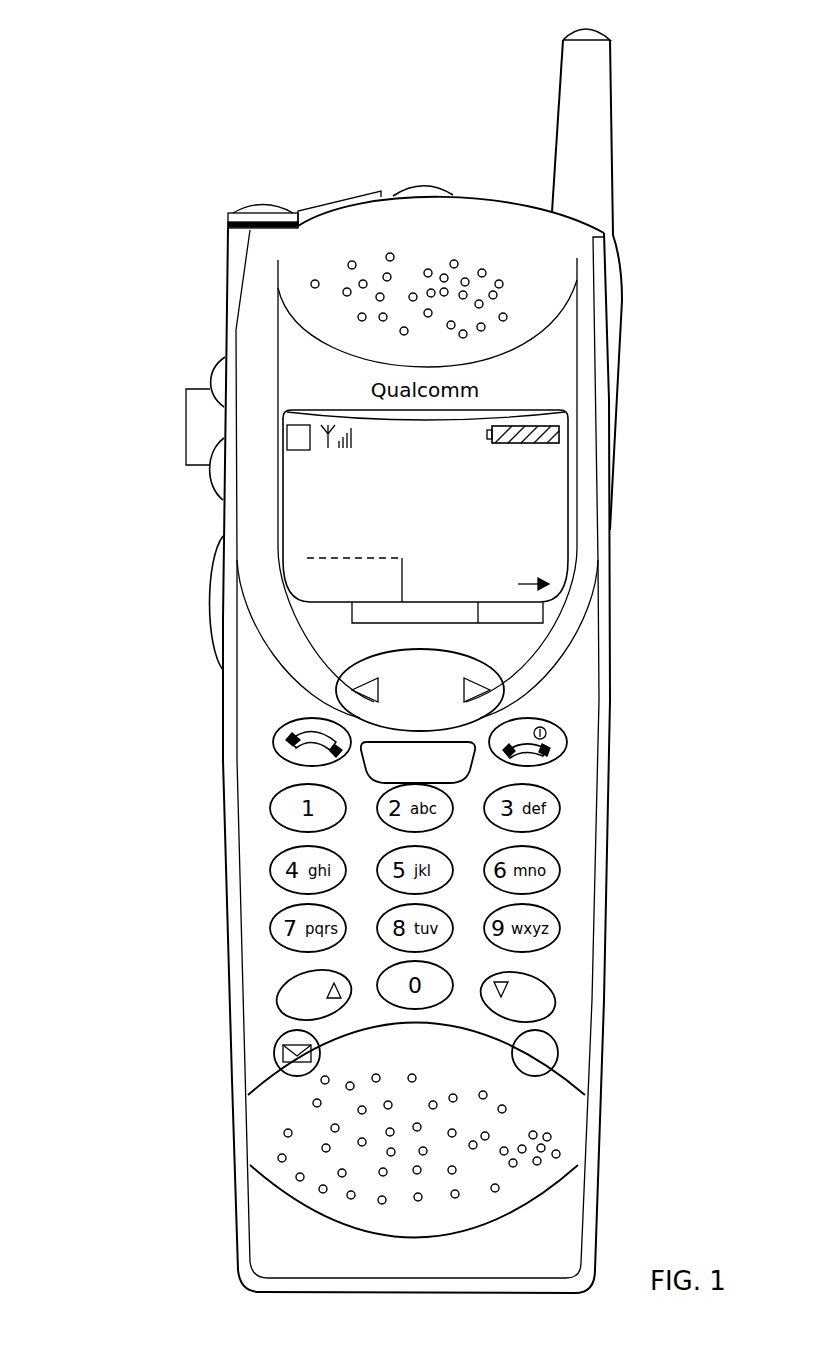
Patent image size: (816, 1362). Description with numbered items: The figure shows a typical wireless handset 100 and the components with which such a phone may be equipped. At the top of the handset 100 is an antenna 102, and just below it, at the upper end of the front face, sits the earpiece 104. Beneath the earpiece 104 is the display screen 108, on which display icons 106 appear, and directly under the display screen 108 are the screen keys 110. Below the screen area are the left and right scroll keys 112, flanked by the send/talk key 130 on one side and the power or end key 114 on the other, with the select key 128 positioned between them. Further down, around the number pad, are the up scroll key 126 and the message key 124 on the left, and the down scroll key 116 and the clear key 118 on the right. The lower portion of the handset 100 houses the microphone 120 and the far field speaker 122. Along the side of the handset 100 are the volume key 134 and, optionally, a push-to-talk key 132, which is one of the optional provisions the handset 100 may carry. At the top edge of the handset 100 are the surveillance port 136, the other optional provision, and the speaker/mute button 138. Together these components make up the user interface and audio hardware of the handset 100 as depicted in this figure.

The wireless handset 100 is at (108, 120).
The antenna 102 is at (613, 82).
The earpiece 104 is at (503, 296).
The display icons 106 is at (560, 434).
The display screen 108 is at (500, 524).
The screen keys 110 is at (543, 623).
The left and right scroll keys 112 is at (504, 690).
The power or end key 114 is at (562, 735).
The down scroll key 116 is at (548, 988).
The clear key 118 is at (558, 1053).
The microphone 120 is at (552, 1140).
The far field speaker 122 is at (331, 1128).
The message key 124 is at (274, 1052).
The up scroll key 126 is at (280, 986).
The select key 128 is at (364, 774).
The send/talk key 130 is at (272, 733).
The push-to-talk key 132 is at (209, 596).
The volume key 134 is at (186, 430).
The surveillance port 136 is at (228, 215).
The speaker/mute button 138 is at (424, 186).